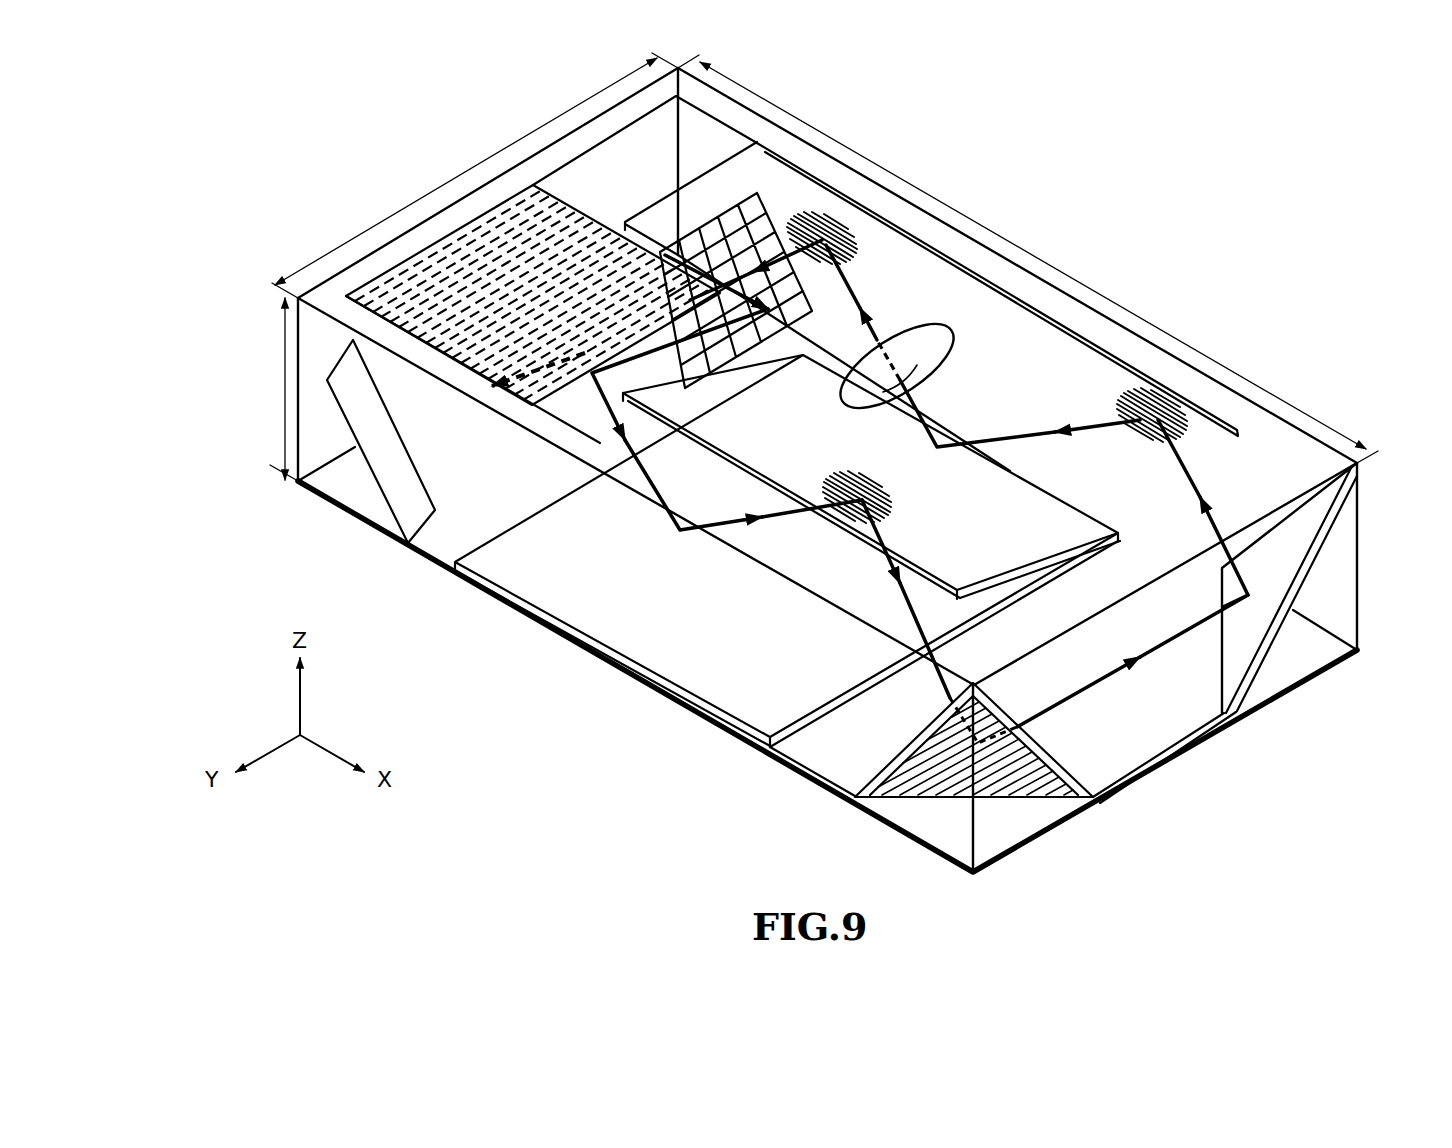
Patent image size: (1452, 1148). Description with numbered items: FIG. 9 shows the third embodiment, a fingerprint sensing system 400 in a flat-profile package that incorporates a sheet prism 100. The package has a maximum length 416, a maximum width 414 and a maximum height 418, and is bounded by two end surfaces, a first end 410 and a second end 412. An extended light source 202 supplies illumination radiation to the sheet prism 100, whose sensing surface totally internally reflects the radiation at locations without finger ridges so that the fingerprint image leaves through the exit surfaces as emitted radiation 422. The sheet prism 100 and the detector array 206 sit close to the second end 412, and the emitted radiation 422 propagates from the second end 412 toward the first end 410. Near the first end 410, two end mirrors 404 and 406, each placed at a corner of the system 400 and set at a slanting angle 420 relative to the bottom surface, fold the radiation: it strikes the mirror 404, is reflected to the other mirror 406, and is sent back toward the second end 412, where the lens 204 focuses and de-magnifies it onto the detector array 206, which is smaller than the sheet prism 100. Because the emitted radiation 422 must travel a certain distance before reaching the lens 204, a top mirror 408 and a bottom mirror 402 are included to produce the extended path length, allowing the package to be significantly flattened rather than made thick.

The sheet prism 100 is at (553, 212).
The extended light source 202 is at (455, 472).
The lens 204 is at (953, 350).
The detector array 206 is at (720, 212).
The system 400 is at (1115, 138).
The bottom mirror 402 is at (672, 660).
The end mirror 404 is at (1033, 783).
The end mirror 406 is at (1287, 560).
The top mirror 408 is at (1210, 428).
The first end 410 is at (1187, 705).
The second end 412 is at (326, 437).
The maximum width 414 is at (992, 232).
The maximum length 416 is at (480, 172).
The maximum height 418 is at (284, 388).
The slanting angle 420 is at (1275, 648).
The emitted radiation 422 is at (1097, 683).